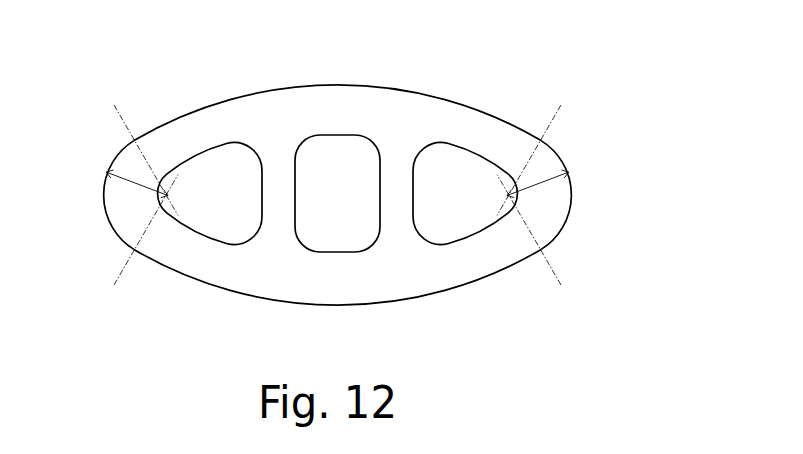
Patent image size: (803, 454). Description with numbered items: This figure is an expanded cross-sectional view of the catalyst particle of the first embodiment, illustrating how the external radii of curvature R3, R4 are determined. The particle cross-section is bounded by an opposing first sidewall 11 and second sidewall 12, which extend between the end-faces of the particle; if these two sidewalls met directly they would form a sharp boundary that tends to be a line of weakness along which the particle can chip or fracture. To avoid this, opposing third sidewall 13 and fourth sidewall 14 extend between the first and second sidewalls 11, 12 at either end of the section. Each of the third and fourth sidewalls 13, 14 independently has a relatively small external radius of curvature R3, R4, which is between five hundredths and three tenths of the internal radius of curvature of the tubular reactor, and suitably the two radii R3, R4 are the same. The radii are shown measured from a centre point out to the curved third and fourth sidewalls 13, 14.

The first sidewall 11 is at (395, 302).
The second sidewall 12 is at (423, 96).
The third sidewall 13 is at (573, 190).
The fourth sidewall 14 is at (100, 182).
The external radius of curvature of the third sidewall R3 is at (533, 195).
The external radius of curvature of the fourth sidewall R4 is at (142, 195).